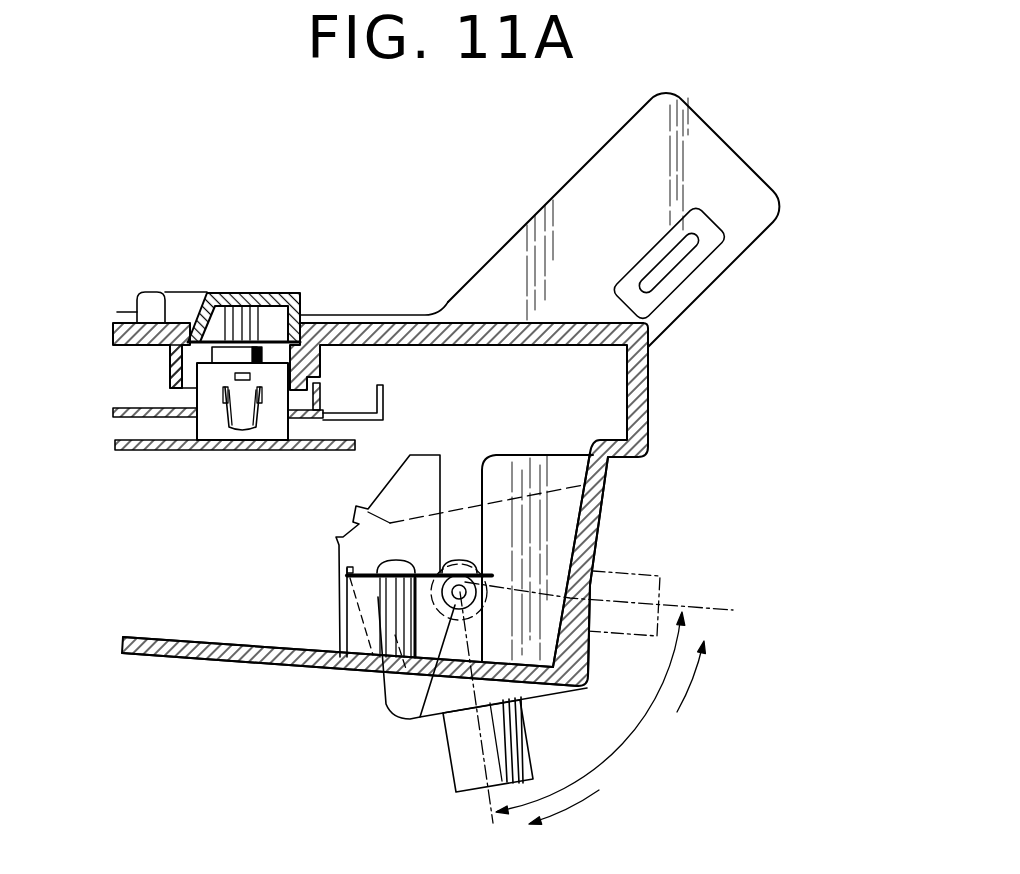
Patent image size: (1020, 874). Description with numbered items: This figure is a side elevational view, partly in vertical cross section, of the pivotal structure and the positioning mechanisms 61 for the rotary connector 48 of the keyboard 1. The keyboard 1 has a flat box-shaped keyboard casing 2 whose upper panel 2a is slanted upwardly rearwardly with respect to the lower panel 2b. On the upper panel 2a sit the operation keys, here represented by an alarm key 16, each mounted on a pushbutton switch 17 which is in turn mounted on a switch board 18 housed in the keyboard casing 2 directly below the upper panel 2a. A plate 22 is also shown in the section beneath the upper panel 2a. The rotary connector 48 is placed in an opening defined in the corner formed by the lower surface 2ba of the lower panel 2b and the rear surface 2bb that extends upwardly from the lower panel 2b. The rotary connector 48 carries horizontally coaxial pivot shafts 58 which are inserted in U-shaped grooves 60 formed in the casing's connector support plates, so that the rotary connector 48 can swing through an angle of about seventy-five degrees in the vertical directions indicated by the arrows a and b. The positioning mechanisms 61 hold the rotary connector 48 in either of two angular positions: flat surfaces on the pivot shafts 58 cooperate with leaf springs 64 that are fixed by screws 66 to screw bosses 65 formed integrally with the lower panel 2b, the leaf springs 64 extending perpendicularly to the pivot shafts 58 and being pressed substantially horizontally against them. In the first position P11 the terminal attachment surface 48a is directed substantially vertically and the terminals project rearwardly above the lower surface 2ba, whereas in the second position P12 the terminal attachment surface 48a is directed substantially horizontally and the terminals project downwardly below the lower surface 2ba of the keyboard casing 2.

The keyboard 1 is at (752, 132).
The keyboard casing 2 is at (466, 256).
The upper panel 2a is at (370, 313).
The lower panel 2b is at (138, 652).
The lower surface 2ba is at (205, 660).
The rear surface 2bb is at (598, 525).
The alarm keys 16 is at (237, 302).
The pushbutton switches 17 is at (241, 428).
The switch board 18 is at (177, 452).
The mounting plate 22 is at (118, 419).
The rotary connector 48 is at (533, 694).
The terminal attachment surface 48a is at (520, 702).
The pivot shafts 58 is at (453, 606).
The U-shaped grooves 60 is at (482, 468).
The positioning mechanisms 61 is at (424, 617).
The leaf springs 64 is at (476, 562).
The screw bosses 65 is at (380, 606).
The screws 66 is at (382, 560).
The first position P11 is at (622, 605).
The second position P12 is at (488, 806).
The arrow a is at (564, 818).
The arrow b is at (693, 673).